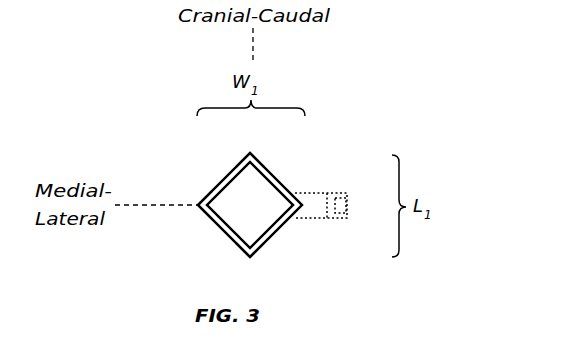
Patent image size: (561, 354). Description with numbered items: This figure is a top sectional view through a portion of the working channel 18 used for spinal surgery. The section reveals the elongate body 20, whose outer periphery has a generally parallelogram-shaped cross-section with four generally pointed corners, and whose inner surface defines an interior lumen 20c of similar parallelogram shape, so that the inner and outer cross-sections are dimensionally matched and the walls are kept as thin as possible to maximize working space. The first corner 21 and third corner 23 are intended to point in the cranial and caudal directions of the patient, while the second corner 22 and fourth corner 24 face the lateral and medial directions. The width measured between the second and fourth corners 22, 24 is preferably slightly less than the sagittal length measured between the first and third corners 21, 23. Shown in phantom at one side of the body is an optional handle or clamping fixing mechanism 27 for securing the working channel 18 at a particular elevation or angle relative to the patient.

The working channel 18 is at (180, 143).
The elongate body 20 is at (280, 237).
The interior lumen 20c is at (260, 187).
The first corner 21 is at (252, 256).
The second corner 22 is at (198, 205).
The third corner 23 is at (250, 152).
The fourth corner 24 is at (312, 193).
The fixing mechanism 27 is at (330, 218).